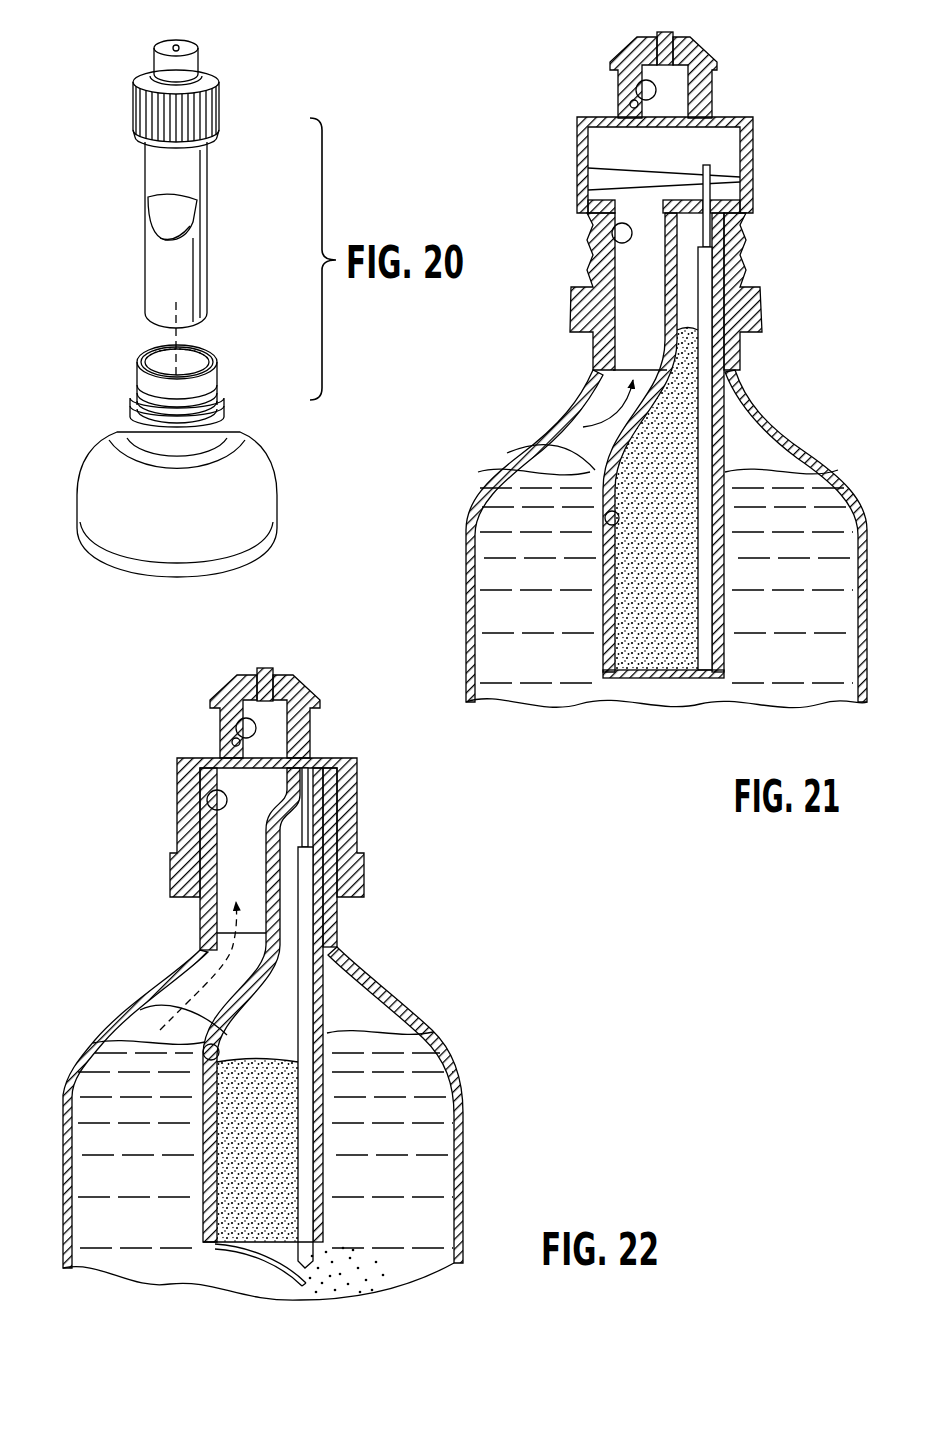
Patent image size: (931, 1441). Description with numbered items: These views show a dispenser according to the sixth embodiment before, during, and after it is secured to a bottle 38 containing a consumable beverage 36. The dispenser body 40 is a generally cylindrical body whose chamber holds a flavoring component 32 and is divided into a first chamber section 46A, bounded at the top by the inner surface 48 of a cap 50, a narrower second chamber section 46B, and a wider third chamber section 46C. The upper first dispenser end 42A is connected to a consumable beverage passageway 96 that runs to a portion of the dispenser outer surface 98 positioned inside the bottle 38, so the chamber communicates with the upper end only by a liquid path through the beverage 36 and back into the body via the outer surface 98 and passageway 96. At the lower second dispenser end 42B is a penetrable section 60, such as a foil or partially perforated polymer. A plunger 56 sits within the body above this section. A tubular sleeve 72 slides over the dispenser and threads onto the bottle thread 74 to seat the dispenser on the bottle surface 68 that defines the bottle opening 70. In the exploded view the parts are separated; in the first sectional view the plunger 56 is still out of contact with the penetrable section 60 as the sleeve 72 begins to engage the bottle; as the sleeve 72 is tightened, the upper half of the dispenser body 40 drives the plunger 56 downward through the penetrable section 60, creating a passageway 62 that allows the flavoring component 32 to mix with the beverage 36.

In FIG. 20, the cap 50 is at (196, 54).
In FIG. 21, the cap 50 is at (686, 36).
In FIG. 22, the cap 50 is at (285, 673).
In FIG. 20, the tubular sleeve 72 is at (215, 108).
In FIG. 21, the tubular sleeve 72 is at (687, 152).
In FIG. 22, the tubular sleeve 72 is at (357, 778).
In FIG. 20, the dispenser body 40 is at (155, 167).
In FIG. 21, the dispenser body 40 is at (722, 265).
In FIG. 22, the dispenser body 40 is at (340, 830).
In FIG. 20, the consumable beverage passageway 96 is at (150, 210).
In FIG. 21, the consumable beverage passageway 96 is at (600, 422).
In FIG. 22, the consumable beverage passageway 96 is at (192, 980).
In FIG. 20, the dispenser outer surface 98 is at (160, 240).
In FIG. 21, the dispenser outer surface 98 is at (507, 453).
In FIG. 22, the dispenser outer surface 98 is at (140, 1010).
In FIG. 20, the bottle surface 68 is at (142, 353).
In FIG. 20, the bottle opening 70 is at (191, 366).
In FIG. 20, the bottle thread 74 is at (217, 378).
In FIG. 20, the bottle 38 is at (202, 546).
In FIG. 21, the bottle 38 is at (815, 456).
In FIG. 22, the bottle 38 is at (410, 1016).
In FIG. 21, the inner surface 48 is at (618, 78).
In FIG. 22, the inner surface 48 is at (236, 713).
In FIG. 21, the first chamber section 46A is at (631, 89).
In FIG. 22, the first chamber section 46A is at (250, 740).
In FIG. 21, the first dispenser end 42A is at (715, 83).
In FIG. 22, the first dispenser end 42A is at (322, 718).
In FIG. 21, the second chamber section 46B is at (611, 228).
In FIG. 22, the second chamber section 46B is at (207, 783).
In FIG. 21, the plunger 56 is at (705, 300).
In FIG. 22, the plunger 56 is at (300, 933).
In FIG. 21, the third chamber section 46C is at (605, 518).
In FIG. 22, the third chamber section 46C is at (203, 1050).
In FIG. 21, the flavoring component 32 is at (650, 585).
In FIG. 22, the flavoring component 32 is at (208, 1147).
In FIG. 21, the consumable beverage 36 is at (521, 669).
In FIG. 22, the consumable beverage 36 is at (122, 1235).
In FIG. 21, the second dispenser end 42B is at (613, 685).
In FIG. 22, the second dispenser end 42B is at (213, 1244).
In FIG. 21, the penetrable section 60 is at (700, 685).
In FIG. 22, the penetrable section 60 is at (288, 1265).
In FIG. 22, the passageway 62 is at (326, 1266).